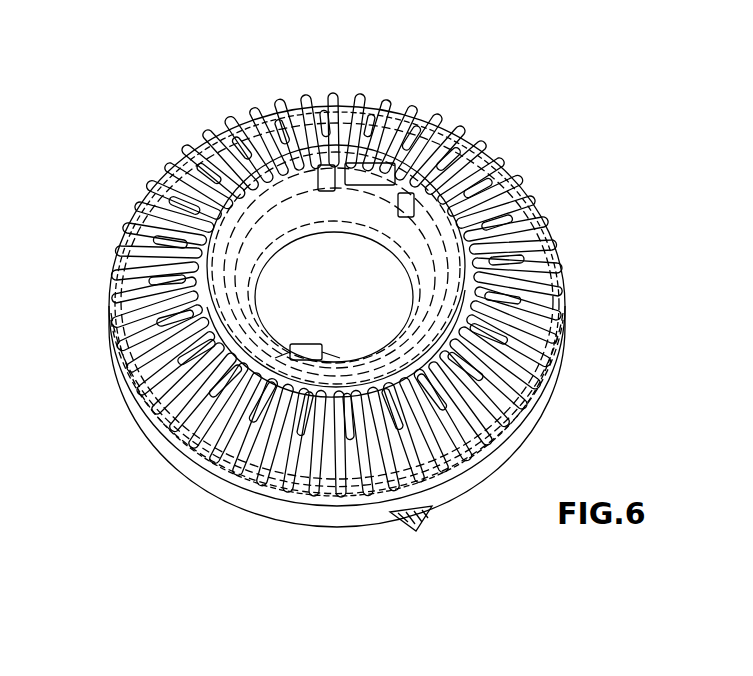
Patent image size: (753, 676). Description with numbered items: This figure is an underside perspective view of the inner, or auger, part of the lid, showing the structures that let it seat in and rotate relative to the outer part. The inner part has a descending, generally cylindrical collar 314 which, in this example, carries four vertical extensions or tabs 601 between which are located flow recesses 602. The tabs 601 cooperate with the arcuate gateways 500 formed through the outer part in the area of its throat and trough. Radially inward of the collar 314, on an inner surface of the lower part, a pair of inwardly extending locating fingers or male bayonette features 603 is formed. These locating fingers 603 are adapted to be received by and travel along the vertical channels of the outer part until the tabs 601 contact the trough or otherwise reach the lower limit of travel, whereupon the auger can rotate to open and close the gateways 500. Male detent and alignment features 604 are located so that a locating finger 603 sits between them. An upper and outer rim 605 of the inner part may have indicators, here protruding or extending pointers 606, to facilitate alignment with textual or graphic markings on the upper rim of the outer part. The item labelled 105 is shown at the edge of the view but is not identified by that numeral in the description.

The housing 105 is at (90, 0).
The gateway 500 is at (133, 0).
The collar 314 is at (440, 200).
The tabs 601 is at (339, 115).
The flow recesses 602 is at (180, 340).
The locating fingers 603 is at (380, 172).
The male detent and alignment features 604 is at (237, 130).
The upper and outer rim 605 is at (307, 530).
The pointers 606 is at (418, 527).